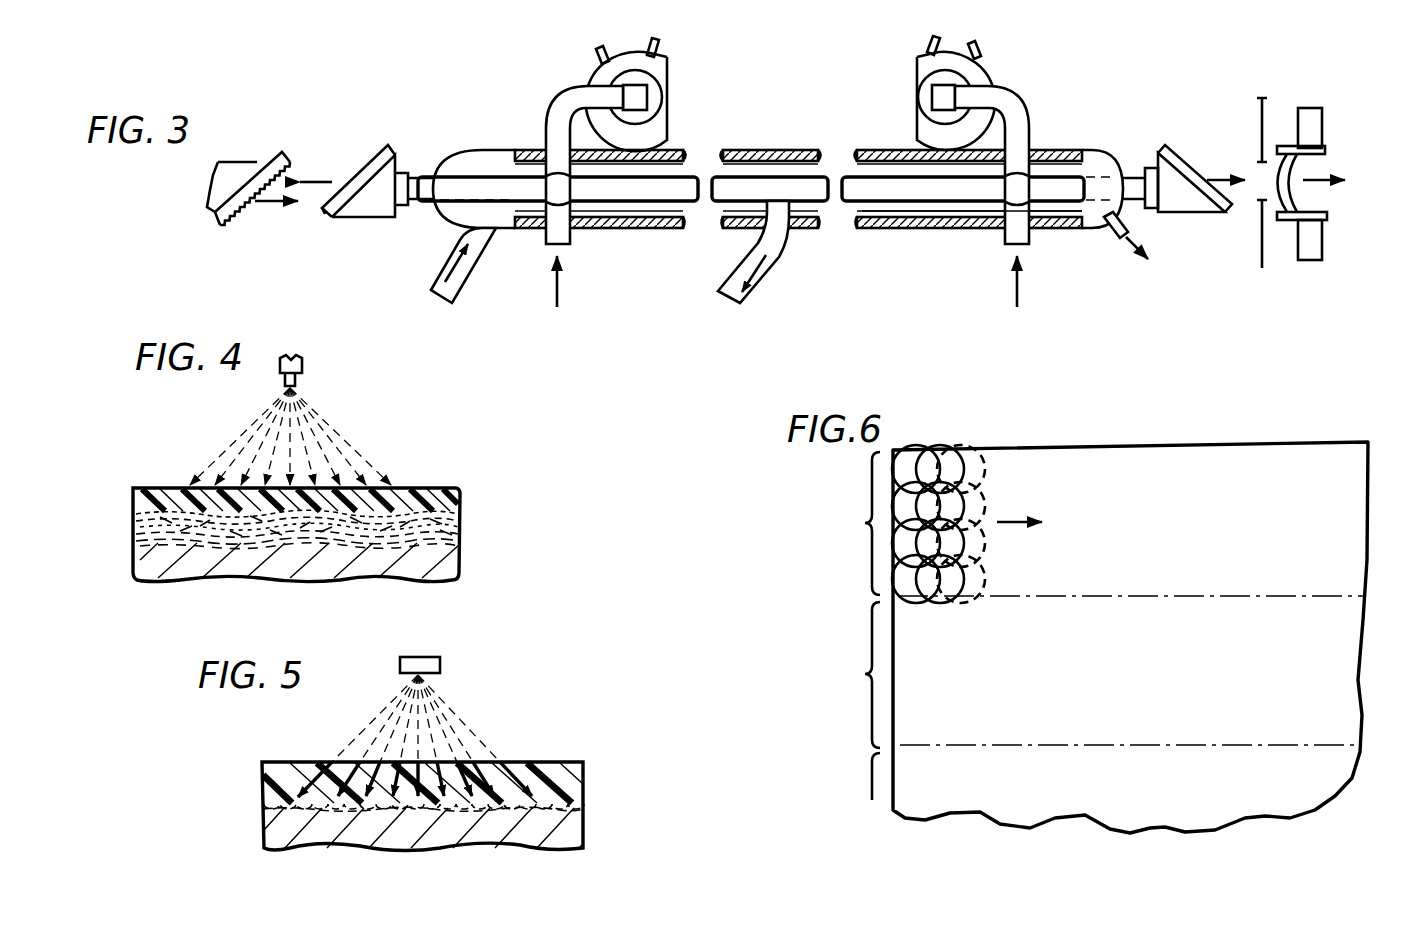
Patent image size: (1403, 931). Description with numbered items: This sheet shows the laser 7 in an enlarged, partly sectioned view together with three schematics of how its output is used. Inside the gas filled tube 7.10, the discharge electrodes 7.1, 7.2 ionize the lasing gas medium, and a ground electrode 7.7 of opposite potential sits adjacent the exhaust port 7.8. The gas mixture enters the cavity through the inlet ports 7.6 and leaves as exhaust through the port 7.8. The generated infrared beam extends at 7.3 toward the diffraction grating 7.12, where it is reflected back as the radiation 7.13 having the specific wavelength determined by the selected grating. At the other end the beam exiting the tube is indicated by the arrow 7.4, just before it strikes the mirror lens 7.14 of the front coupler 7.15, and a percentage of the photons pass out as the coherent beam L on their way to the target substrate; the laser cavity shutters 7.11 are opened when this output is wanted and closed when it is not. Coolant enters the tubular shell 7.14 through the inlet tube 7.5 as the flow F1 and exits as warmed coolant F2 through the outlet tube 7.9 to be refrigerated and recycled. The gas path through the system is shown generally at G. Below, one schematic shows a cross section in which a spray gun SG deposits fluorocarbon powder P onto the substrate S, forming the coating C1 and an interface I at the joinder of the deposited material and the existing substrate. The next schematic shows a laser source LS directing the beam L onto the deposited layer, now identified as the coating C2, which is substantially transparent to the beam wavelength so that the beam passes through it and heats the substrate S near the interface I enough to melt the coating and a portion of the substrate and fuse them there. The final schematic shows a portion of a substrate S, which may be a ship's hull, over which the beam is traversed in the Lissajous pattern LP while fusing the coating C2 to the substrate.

In FIG. 3, the laser 7 is at (1082, 137).
In FIG. 3, the discharge electrode 7.1 is at (647, 94).
In FIG. 3, the discharge electrode 7.2 is at (932, 98).
In FIG. 3, the laser IR light beam extension 7.3 is at (332, 182).
In FIG. 3, the beam exiting from the tube 7.4 is at (1218, 180).
In FIG. 3, the inlet tube 7.5 is at (449, 301).
In FIG. 3, the inlet ports 7.6 is at (788, 210).
In FIG. 3, the ground electrode 7.7 is at (778, 232).
In FIG. 3, the exhaust port 7.8 is at (738, 301).
In FIG. 3, the outlet tube 7.9 is at (1114, 238).
In FIG. 3, the gas filled tube 7.10 is at (895, 212).
In FIG. 3, the laser cavity shutters 7.11 is at (1262, 258).
In FIG. 3, the diffraction grating 7.12 is at (233, 162).
In FIG. 3, the reflected radiation 7.13 is at (268, 202).
In FIG. 3, the mirror lens / tubular shell 7.14 is at (667, 229).
In FIG. 3, the front coupler 7.15 is at (1322, 243).
In FIG. 3, the glass fiber / rod G is at (748, 186).
In FIG. 3, the entering coolant F1 is at (446, 272).
In FIG. 3, the warmed coolant F2 is at (1150, 265).
In FIG. 3, the laser beam L is at (1315, 180).
In FIG. 5, the laser beam L is at (467, 738).
In FIG. 4, the spray gun SG is at (303, 362).
In FIG. 4, the fluorocarbon powder P is at (324, 430).
In FIG. 4, the coating C1 is at (408, 487).
In FIG. 5, the coating C1 is at (448, 751).
In FIG. 6, the coating C1 is at (1225, 448).
In FIG. 5, the coating C2 is at (543, 763).
In FIG. 6, the coating C2 is at (967, 506).
In FIG. 4, the interface I is at (453, 521).
In FIG. 5, the interface I is at (581, 803).
In FIG. 4, the substrate S is at (448, 564).
In FIG. 5, the substrate S is at (578, 836).
In FIG. 6, the substrate S is at (940, 814).
In FIG. 5, the laser source LS is at (441, 664).
In FIG. 6, the Lissajous pattern LP is at (953, 511).